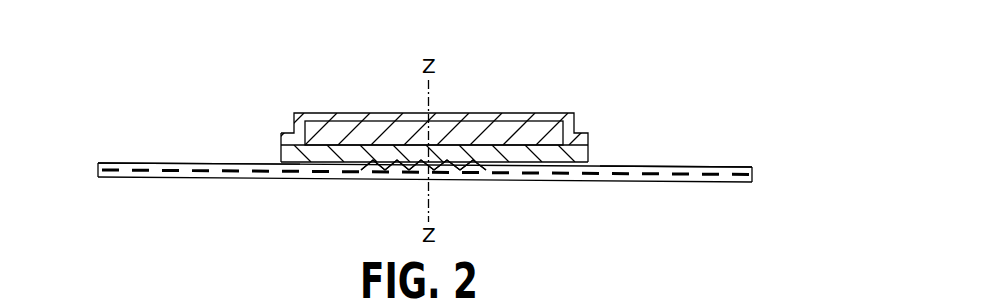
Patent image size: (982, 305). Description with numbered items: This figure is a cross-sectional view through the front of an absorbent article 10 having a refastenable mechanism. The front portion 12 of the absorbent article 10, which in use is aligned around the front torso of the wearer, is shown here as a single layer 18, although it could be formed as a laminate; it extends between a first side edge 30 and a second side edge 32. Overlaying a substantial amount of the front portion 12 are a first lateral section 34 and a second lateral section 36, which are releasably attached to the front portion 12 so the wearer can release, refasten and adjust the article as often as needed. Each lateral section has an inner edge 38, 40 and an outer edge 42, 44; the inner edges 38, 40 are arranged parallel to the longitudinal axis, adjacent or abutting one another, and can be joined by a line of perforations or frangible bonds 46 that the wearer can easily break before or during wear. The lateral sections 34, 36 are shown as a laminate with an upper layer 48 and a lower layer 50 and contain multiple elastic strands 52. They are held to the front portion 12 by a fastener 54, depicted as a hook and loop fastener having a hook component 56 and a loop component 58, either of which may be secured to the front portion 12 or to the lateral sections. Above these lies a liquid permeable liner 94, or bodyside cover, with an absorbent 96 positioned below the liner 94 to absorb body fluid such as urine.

The absorbent article 10 is at (633, 57).
The front portion 12 is at (605, 117).
The single layer 18 is at (592, 153).
The first side edge 30 is at (280, 153).
The second side edge 32 is at (598, 161).
The first lateral section 34 is at (183, 163).
The second lateral section 36 is at (673, 167).
The inner edge 38 is at (415, 171).
The inner edge 40 is at (433, 173).
The outer edge 42 is at (98, 168).
The outer edge 44 is at (752, 171).
The perforations or frangible bonds 46 is at (423, 176).
The upper layer 48 is at (717, 168).
The lower layer 50 is at (713, 177).
The elastic strands 52 is at (663, 176).
The fastener 54 is at (367, 169).
The hook component 56 is at (480, 166).
The loop component 58 is at (486, 172).
The liquid permeable liner 94 is at (542, 119).
The absorbent 96 is at (477, 135).